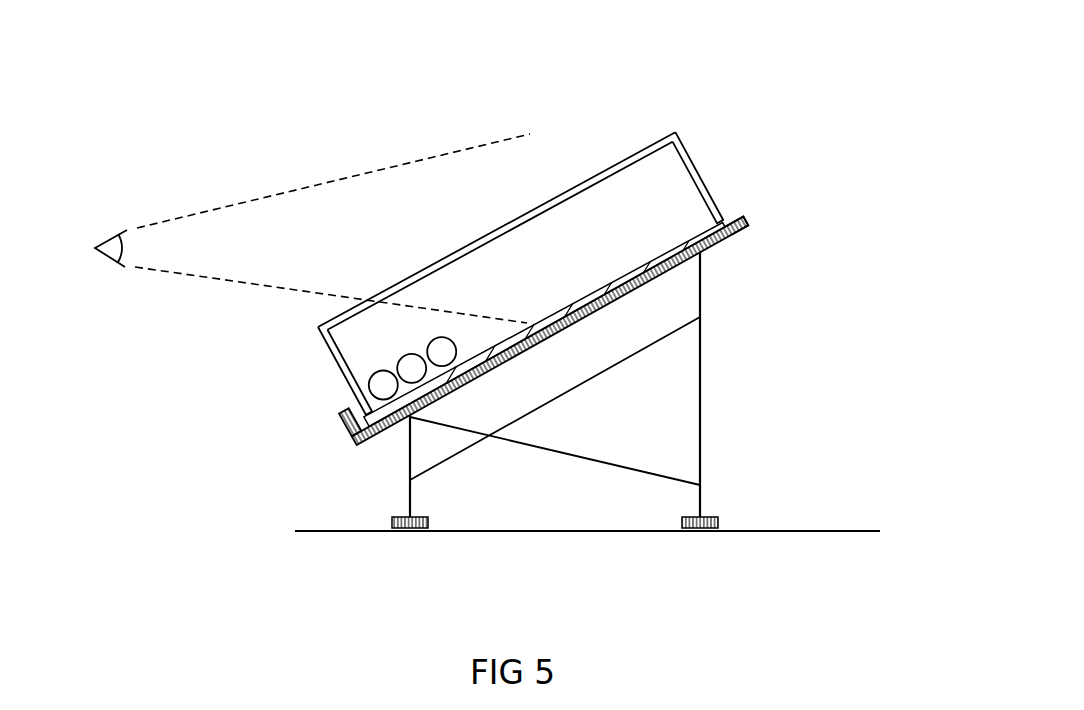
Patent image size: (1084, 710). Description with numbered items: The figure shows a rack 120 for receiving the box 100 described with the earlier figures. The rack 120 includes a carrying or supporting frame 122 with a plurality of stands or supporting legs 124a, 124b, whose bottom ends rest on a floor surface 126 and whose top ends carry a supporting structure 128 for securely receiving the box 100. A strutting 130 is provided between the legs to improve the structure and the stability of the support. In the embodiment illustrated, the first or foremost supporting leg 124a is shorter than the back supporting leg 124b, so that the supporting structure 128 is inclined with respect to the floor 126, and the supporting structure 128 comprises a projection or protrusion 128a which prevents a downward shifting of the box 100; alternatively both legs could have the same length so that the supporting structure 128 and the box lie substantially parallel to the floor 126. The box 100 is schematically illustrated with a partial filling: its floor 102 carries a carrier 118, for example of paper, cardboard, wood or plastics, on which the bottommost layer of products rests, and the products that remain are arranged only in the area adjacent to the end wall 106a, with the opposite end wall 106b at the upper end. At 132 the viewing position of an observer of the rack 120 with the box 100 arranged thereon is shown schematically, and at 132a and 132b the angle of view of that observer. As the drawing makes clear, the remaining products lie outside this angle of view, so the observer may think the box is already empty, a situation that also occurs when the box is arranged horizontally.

The box 100 is at (732, 89).
The floor 102 is at (657, 277).
The end wall 106a is at (328, 356).
The end wall 106b is at (718, 202).
The carrier 118 is at (583, 287).
The rack 120 is at (841, 323).
The supporting frame 122 is at (708, 409).
The first supporting leg 124a is at (410, 468).
The back supporting leg 124b is at (703, 457).
The floor surface 126 is at (776, 534).
The supporting structure 128 is at (737, 237).
The projection 128a is at (345, 418).
The strutting 130 is at (504, 441).
The viewing position 132 is at (110, 236).
The angle of view 132a is at (316, 183).
The angle of view 132b is at (180, 273).